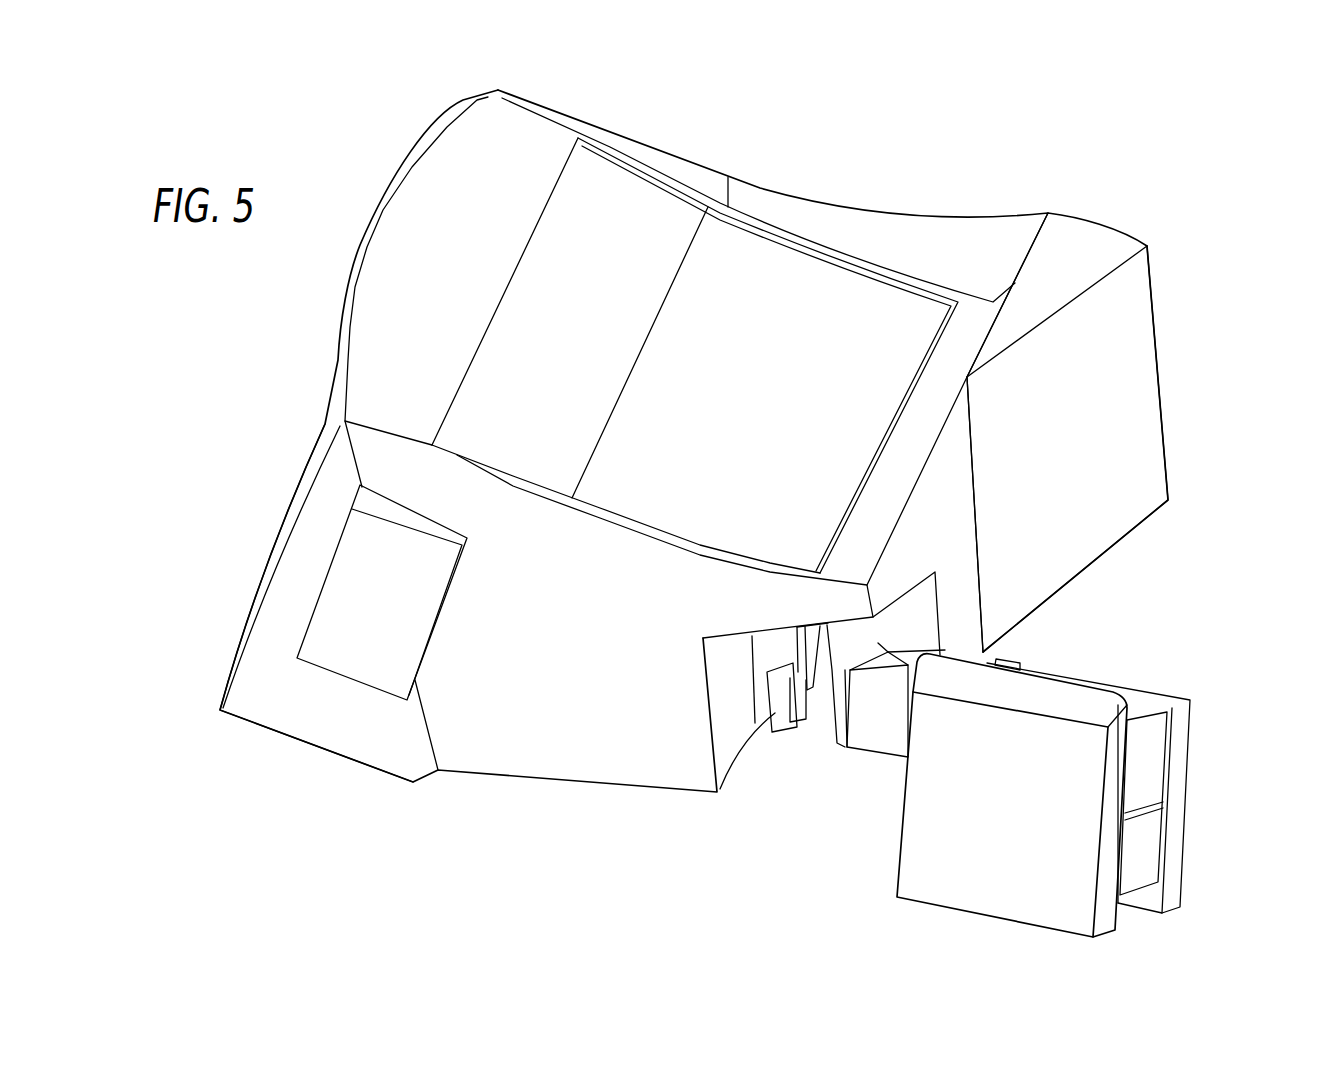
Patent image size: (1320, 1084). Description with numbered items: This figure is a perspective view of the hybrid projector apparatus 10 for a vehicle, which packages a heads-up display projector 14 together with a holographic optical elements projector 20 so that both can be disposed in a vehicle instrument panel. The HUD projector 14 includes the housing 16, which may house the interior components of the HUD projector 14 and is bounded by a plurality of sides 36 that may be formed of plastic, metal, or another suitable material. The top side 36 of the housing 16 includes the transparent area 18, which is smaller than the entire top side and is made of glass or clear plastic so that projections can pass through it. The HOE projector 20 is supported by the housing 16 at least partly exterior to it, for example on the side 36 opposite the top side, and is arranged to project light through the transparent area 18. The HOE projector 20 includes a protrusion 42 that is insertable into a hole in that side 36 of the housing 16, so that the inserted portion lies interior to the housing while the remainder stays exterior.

The hybrid projector apparatus 10 is at (1087, 133).
The heads-up display projector 14 is at (1096, 222).
The housing 16 is at (480, 143).
The transparent area 18 is at (777, 333).
The holographic optical elements projector 20 is at (1154, 672).
The sides 36 is at (898, 243).
The protrusion 42 is at (837, 672).